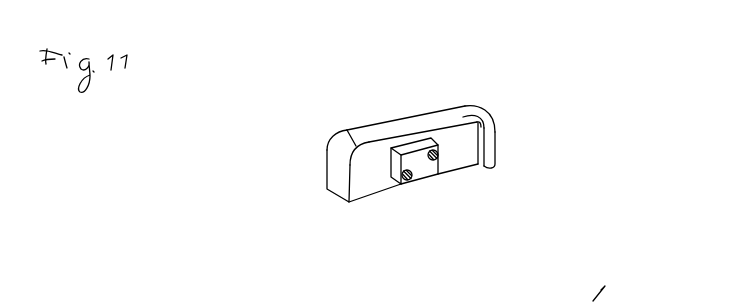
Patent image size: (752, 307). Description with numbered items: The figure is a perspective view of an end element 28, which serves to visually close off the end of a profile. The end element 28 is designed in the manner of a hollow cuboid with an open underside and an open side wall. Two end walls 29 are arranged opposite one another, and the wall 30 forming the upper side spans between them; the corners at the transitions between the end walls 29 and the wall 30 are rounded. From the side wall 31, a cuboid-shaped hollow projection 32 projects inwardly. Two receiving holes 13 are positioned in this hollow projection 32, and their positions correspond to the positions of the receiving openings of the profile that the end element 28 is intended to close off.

The receiving holes 13 is at (434, 150).
The end element 28 is at (495, 97).
The end walls 29 is at (335, 181).
The wall forming the upper side 30 is at (399, 127).
The side wall 31 is at (368, 173).
The cuboid-shaped hollow projection 32 is at (409, 156).